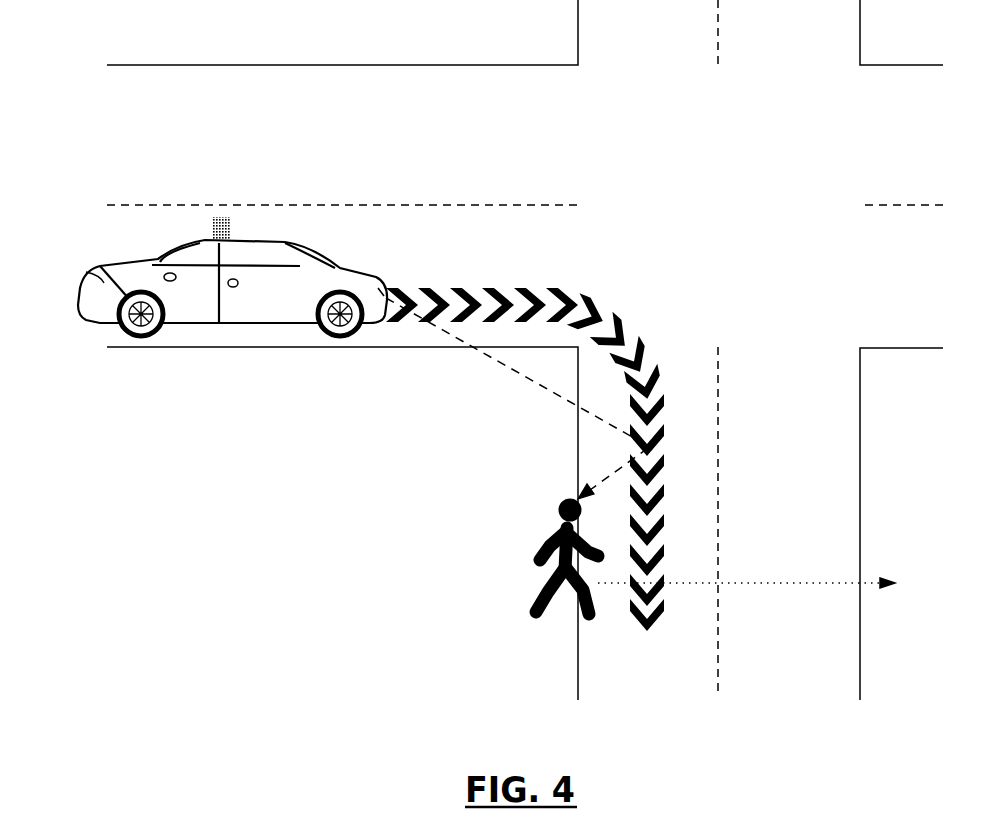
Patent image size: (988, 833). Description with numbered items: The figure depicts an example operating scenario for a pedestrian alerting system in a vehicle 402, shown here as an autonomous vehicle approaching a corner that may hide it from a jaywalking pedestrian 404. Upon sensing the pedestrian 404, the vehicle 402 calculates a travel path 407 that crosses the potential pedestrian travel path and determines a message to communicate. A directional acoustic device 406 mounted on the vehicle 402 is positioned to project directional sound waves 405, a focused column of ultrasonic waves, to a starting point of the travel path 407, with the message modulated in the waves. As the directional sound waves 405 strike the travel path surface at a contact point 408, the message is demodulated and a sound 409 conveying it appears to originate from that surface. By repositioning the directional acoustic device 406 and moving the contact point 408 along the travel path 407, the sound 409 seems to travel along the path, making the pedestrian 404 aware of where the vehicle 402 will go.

The vehicle 402 is at (82, 296).
The pedestrian 404 is at (545, 542).
The directional sound waves 405 is at (542, 392).
The directional acoustic device 406 is at (213, 215).
The travel path 407 is at (664, 525).
The contact point 408 is at (652, 449).
The sound 409 is at (604, 470).